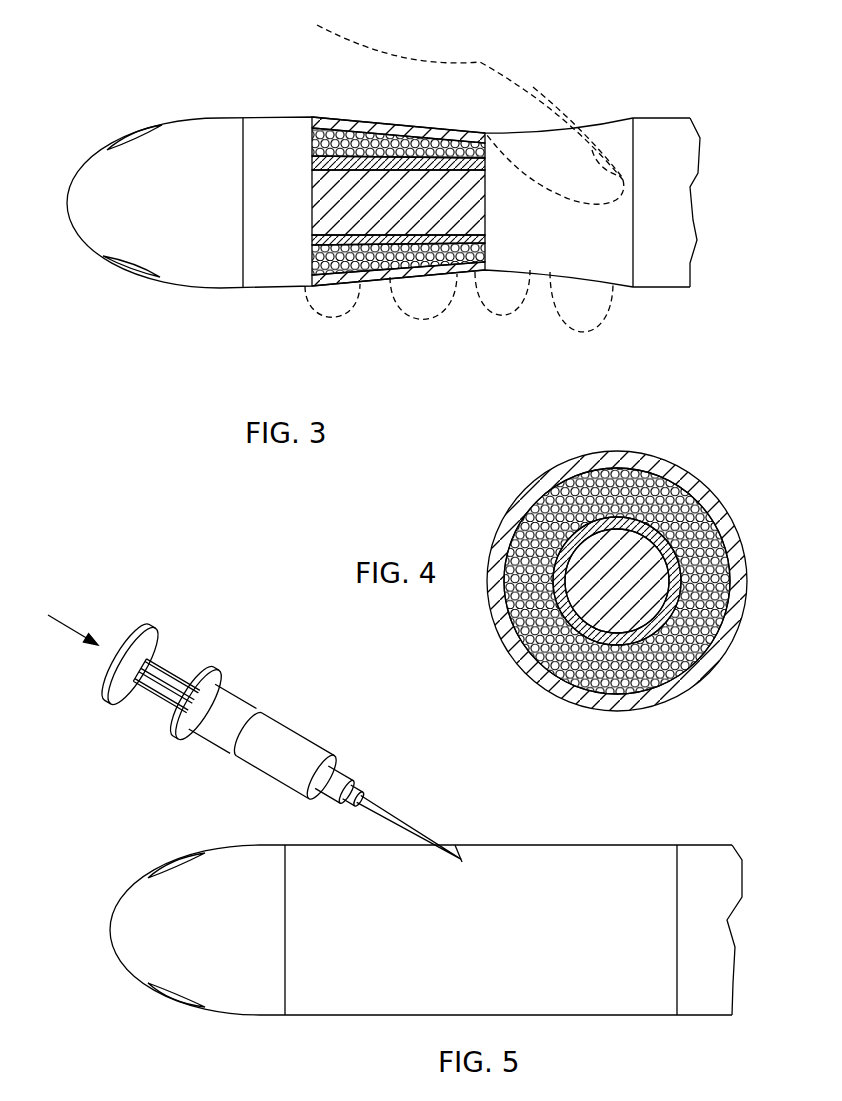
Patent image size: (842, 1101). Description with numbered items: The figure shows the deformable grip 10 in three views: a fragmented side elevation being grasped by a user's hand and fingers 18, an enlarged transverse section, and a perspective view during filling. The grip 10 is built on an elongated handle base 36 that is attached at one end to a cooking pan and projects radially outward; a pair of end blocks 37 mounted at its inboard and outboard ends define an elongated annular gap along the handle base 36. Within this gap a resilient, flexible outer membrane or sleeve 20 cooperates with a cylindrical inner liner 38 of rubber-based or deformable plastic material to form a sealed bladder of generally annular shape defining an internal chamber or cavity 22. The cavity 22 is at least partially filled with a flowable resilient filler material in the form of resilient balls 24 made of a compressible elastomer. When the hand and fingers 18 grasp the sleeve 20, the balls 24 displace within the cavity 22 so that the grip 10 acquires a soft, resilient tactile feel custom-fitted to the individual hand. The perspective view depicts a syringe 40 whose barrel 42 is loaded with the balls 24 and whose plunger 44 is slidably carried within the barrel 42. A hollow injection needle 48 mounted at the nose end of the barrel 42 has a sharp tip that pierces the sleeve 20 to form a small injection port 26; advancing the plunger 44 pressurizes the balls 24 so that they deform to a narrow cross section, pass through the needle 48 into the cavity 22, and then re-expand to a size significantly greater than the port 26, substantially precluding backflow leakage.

In FIG. 3, the deformable grip 10 is at (250, 335).
In FIG. 4, the deformable grip 10 is at (689, 433).
In FIG. 5, the deformable grip 10 is at (649, 810).
In FIG. 3, the user's hand and fingers 18 is at (480, 62).
In FIG. 3, the outer membrane or sleeve 20 is at (400, 120).
In FIG. 4, the outer membrane or sleeve 20 is at (707, 490).
In FIG. 5, the outer membrane or sleeve 20 is at (565, 1008).
In FIG. 3, the internal chamber or cavity 22 is at (337, 119).
In FIG. 3, the resilient balls 24 is at (374, 272).
In FIG. 4, the resilient balls 24 is at (723, 555).
In FIG. 5, the injection port 26 is at (462, 860).
In FIG. 3, the handle base 36 is at (463, 197).
In FIG. 4, the handle base 36 is at (537, 507).
In FIG. 3, the end blocks 37 is at (100, 160).
In FIG. 5, the end blocks 37 is at (132, 968).
In FIG. 3, the inner liner 38 is at (400, 235).
In FIG. 4, the inner liner 38 is at (658, 623).
In FIG. 5, the syringe 40 is at (282, 753).
In FIG. 5, the barrel 42 is at (243, 757).
In FIG. 5, the plunger 44 is at (167, 662).
In FIG. 5, the hollow injection needle 48 is at (380, 812).